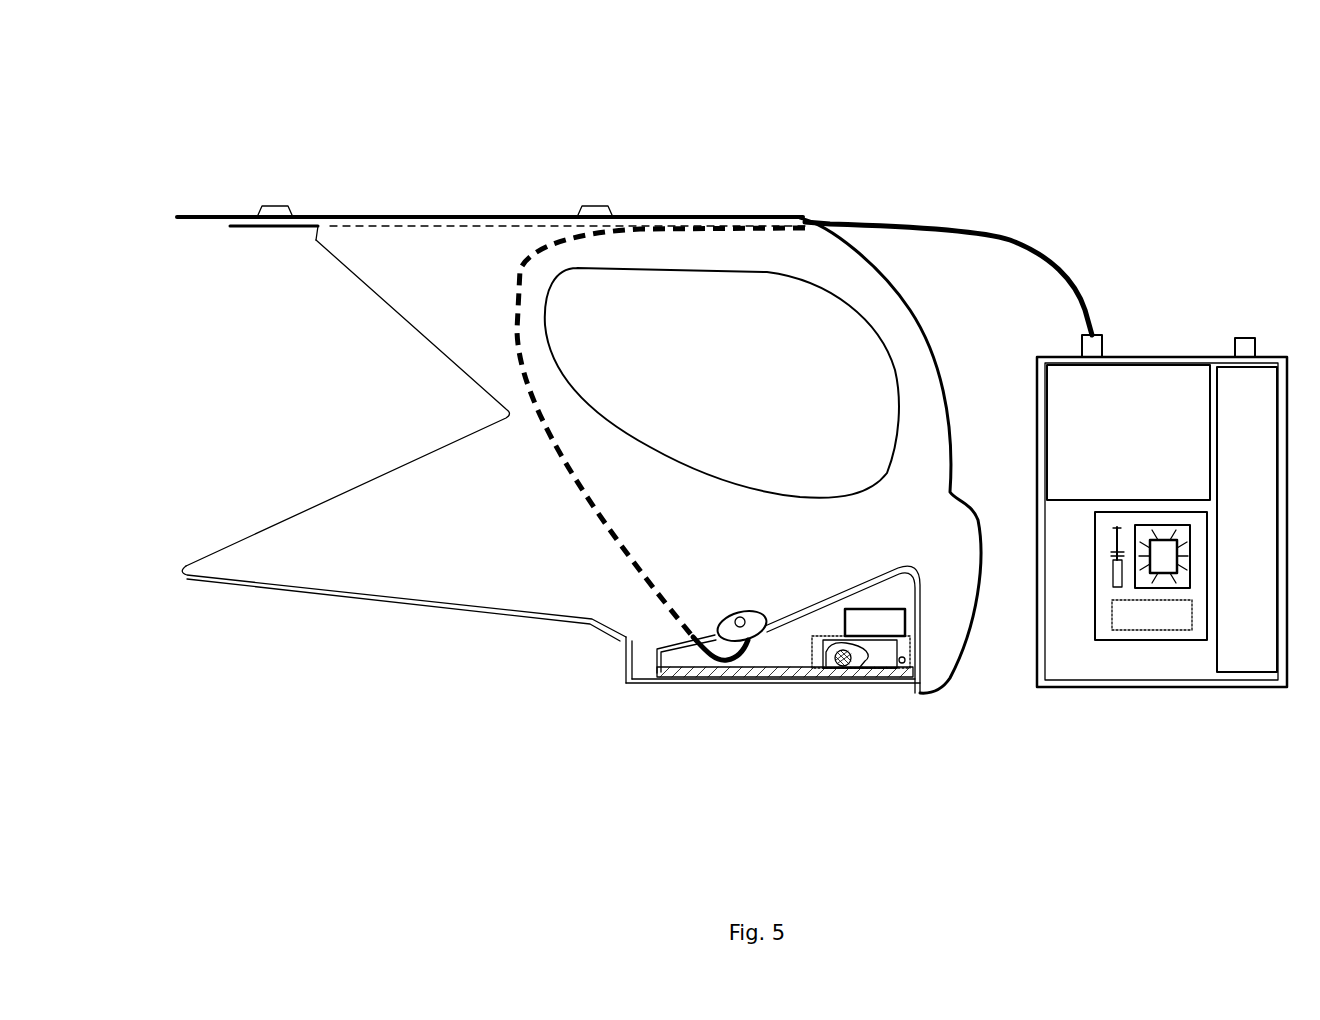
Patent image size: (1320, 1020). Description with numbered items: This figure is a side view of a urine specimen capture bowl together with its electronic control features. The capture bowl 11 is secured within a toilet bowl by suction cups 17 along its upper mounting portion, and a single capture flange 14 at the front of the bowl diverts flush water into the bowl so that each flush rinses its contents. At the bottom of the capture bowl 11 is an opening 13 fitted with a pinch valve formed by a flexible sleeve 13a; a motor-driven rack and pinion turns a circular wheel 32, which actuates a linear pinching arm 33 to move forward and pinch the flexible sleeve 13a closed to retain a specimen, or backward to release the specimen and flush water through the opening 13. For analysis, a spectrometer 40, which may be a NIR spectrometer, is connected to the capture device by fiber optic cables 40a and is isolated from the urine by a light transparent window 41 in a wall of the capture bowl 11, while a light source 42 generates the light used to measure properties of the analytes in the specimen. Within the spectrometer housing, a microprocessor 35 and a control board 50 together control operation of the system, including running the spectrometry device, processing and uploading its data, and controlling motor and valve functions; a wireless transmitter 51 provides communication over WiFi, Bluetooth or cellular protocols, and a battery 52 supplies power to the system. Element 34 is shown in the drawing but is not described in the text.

The suction cups 17 is at (278, 207).
The capture bowl 11 is at (330, 476).
The capture flange 14 is at (280, 563).
The opening 13 is at (645, 660).
The flexible sleeve 13a is at (627, 688).
The fiber optic cables 40a is at (720, 648).
The light transparent window 41 is at (740, 627).
The support 34 is at (817, 660).
The circular wheel 32 is at (847, 670).
The linear pinching arm 33 is at (862, 672).
The battery 52 is at (872, 628).
The spectrometer 40 is at (1152, 332).
The light source 42 is at (1243, 432).
The wireless transmitter 51 is at (1113, 578).
The microprocessor 35 is at (1163, 567).
The control board 50 is at (1122, 622).